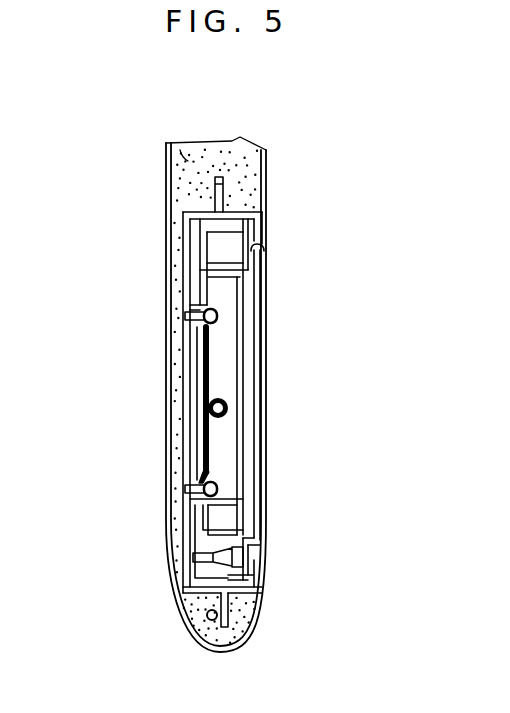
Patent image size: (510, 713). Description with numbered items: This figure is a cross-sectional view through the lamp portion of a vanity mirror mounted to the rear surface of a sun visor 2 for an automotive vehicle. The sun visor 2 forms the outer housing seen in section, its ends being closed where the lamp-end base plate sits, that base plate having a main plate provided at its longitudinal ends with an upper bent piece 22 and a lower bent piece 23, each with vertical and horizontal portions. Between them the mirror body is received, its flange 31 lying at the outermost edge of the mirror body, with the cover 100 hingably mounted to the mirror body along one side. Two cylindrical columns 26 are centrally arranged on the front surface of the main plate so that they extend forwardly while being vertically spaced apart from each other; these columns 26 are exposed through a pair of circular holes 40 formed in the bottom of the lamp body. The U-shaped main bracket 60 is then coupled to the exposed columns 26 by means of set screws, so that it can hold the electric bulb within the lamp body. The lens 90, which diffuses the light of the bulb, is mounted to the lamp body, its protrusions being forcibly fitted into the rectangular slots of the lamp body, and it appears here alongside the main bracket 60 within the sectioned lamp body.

The sun visor 2 is at (162, 142).
The upper bent piece 22 is at (220, 166).
The flange 31 is at (258, 213).
The cover 100 is at (263, 265).
The circular holes 40 is at (218, 328).
The lens 90 is at (228, 410).
The main bracket 60 is at (210, 455).
The cylindrical columns 26 is at (193, 352).
The lower bent piece 23 is at (245, 630).